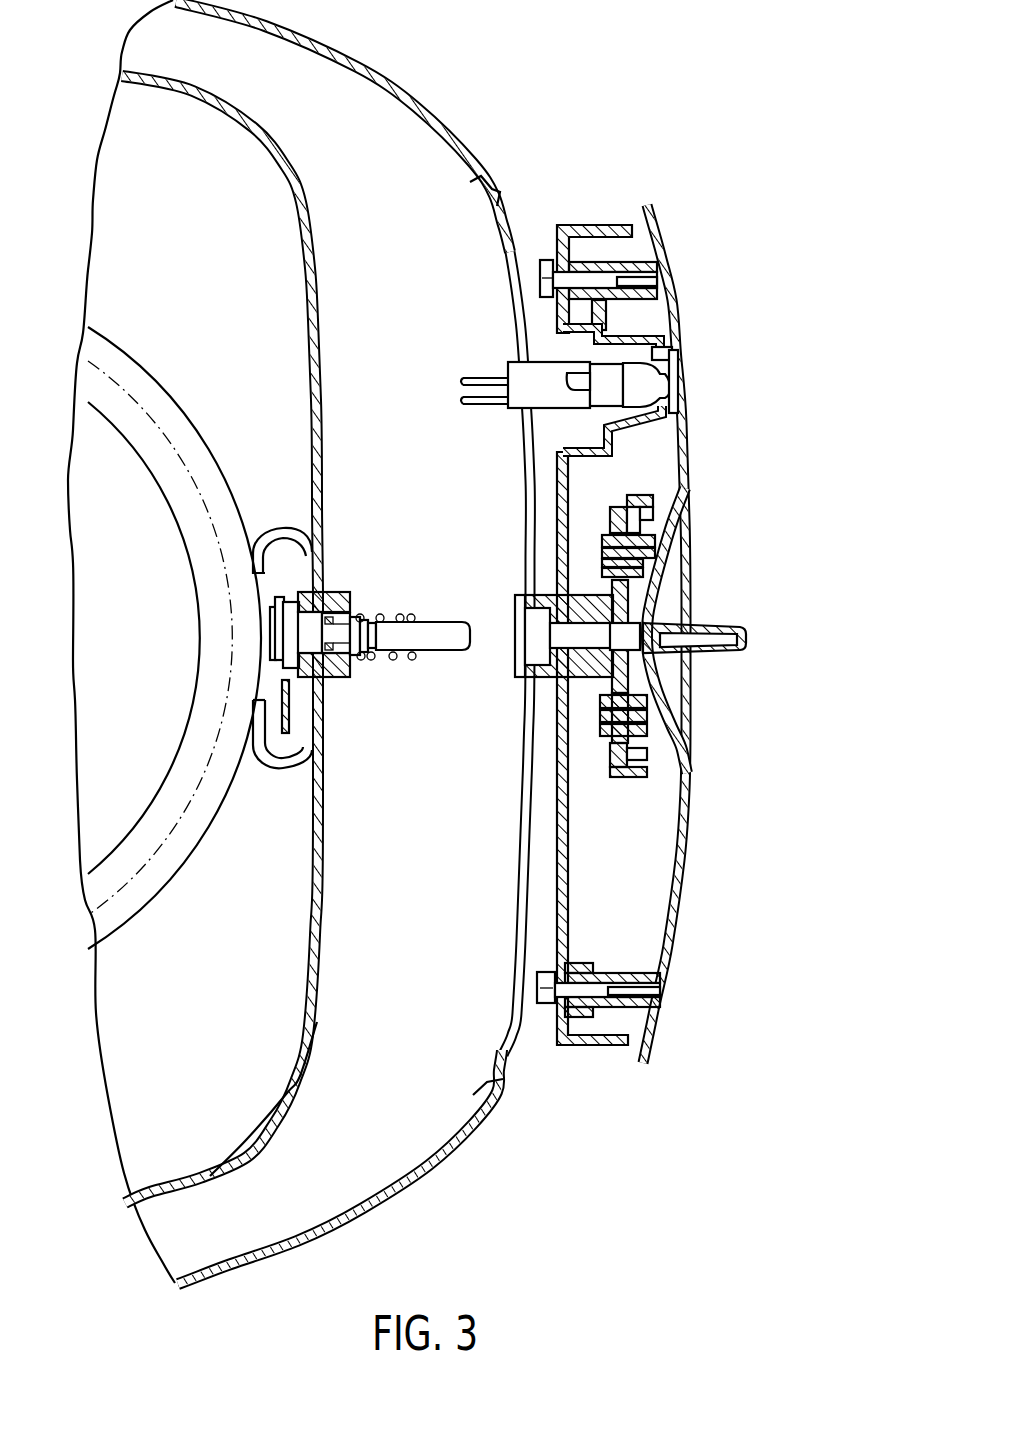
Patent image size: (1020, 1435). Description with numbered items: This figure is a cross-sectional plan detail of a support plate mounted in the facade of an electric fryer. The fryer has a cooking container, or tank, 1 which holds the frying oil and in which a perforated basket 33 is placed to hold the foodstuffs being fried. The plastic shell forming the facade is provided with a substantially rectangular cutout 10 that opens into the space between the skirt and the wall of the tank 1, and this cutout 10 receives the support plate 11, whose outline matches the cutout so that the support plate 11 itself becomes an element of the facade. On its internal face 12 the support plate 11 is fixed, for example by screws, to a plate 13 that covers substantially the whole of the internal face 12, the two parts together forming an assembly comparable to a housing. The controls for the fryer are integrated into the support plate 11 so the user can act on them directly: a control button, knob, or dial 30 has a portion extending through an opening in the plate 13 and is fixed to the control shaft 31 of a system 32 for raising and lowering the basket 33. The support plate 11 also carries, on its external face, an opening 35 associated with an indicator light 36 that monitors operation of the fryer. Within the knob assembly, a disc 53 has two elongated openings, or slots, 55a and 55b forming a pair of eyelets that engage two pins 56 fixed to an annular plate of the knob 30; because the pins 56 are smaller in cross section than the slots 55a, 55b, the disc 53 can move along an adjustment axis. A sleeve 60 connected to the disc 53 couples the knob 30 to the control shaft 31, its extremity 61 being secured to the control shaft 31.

The cooking container 1 is at (316, 238).
The cutout 10 is at (514, 1036).
The support plate 11 is at (688, 906).
The internal face 12 is at (670, 860).
The plate 13 is at (590, 475).
The control button 30 is at (719, 626).
The control shaft 31 is at (431, 633).
The system for raising and lowering 32 is at (342, 590).
The perforated basket 33 is at (140, 366).
The opening 35 is at (682, 373).
The indicator light 36 is at (628, 388).
The disc 53 is at (612, 762).
The elongated opening 55a is at (612, 528).
The elongated opening 55b is at (607, 748).
The pins 56 is at (613, 540).
The sleeve 60 is at (513, 673).
The extremity 61 is at (586, 597).